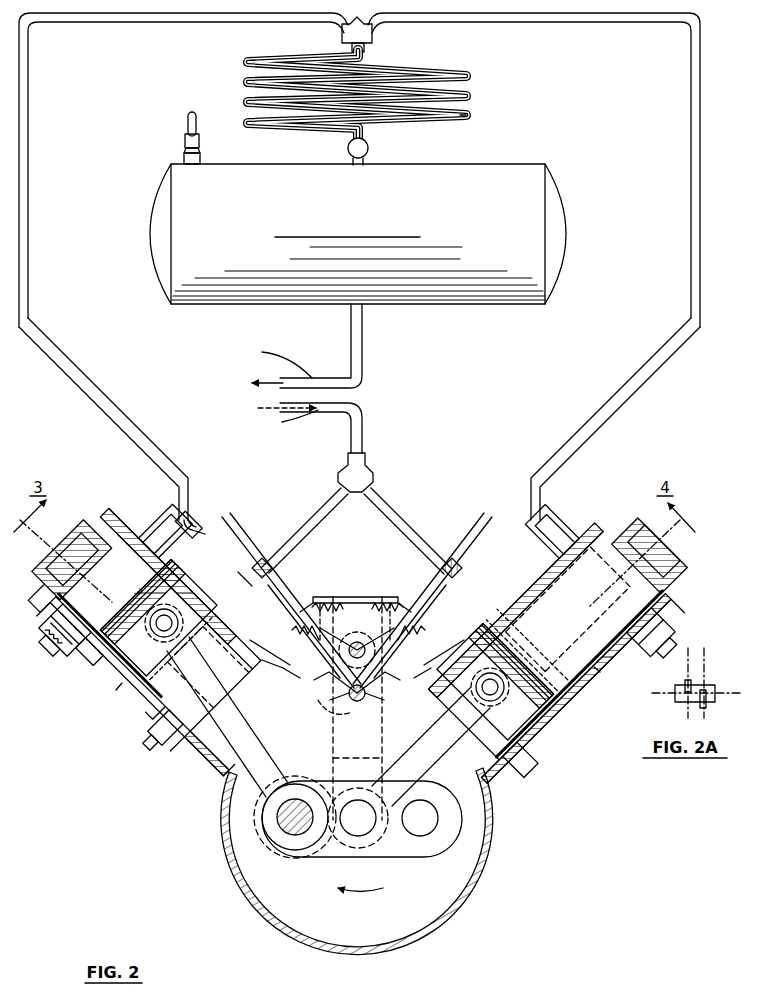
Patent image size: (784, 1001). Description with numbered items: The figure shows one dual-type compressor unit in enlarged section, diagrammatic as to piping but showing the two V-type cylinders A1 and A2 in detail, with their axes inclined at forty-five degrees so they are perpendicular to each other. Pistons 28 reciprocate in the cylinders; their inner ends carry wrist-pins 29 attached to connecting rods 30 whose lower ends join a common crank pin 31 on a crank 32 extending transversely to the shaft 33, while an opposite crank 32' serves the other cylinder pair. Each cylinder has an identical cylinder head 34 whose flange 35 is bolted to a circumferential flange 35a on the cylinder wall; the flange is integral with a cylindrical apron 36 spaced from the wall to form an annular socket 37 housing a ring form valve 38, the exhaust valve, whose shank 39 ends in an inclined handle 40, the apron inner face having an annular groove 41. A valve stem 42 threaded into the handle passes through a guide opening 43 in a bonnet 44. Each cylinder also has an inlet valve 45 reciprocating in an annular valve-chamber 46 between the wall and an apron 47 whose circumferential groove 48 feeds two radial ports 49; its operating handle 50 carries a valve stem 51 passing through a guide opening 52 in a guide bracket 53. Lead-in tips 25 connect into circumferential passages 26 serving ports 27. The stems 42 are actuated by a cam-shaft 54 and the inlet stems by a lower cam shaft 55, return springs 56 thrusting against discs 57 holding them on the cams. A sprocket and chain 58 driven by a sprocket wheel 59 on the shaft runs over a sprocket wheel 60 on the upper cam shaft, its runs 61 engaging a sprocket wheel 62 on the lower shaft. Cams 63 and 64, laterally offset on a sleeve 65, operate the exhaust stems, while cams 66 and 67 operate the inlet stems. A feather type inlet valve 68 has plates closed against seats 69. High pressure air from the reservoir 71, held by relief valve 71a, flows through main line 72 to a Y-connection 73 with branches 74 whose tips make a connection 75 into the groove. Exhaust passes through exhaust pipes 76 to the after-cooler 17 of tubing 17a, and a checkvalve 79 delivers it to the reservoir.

In FIG. 2, the after-cooler 17 is at (474, 85).
In FIG. 2, the tubing 17a is at (421, 120).
In FIG. 2, the lead-in tips 25 is at (264, 578).
In FIG. 2, the circumferential passages 26 is at (204, 676).
In FIG. 2, the ports 27 is at (48, 607).
In FIG. 2, the pistons 28 is at (180, 580).
In FIG. 2, the wrist-pins 29 is at (167, 616).
In FIG. 2, the connecting rods 30 is at (240, 715).
In FIG. 2, the crank pin 31 is at (280, 832).
In FIG. 2, the crank 32 is at (298, 830).
In FIG. 2, the crank 32' is at (365, 829).
In FIG. 2, the shaft 33 is at (368, 830).
In FIG. 2, the cylinder head 34 is at (150, 520).
In FIG. 2, the flange 35 is at (199, 524).
In FIG. 2, the circumferential flange 35a is at (96, 676).
In FIG. 2, the cylindrical apron 36 is at (58, 644).
In FIG. 2, the annular socket 37 is at (60, 652).
In FIG. 2, the ring form valve 38 is at (42, 624).
In FIG. 2, the shank 39 is at (197, 520).
In FIG. 2, the handle 40 is at (232, 535).
In FIG. 2, the annular groove 41 is at (46, 634).
In FIG. 2, the valve stem 42 is at (256, 555).
In FIG. 2, the guide opening 43 is at (325, 596).
In FIG. 2, the bonnet 44 is at (380, 600).
In FIG. 2, the inlet valve 45 is at (135, 710).
In FIG. 2, the annular valve-chamber 46 is at (158, 735).
In FIG. 2, the apron 47 is at (150, 722).
In FIG. 2, the circumferential groove 48 is at (132, 728).
In FIG. 2, the radial ports 49 is at (215, 640).
In FIG. 2, the operating handle 50 is at (270, 652).
In FIG. 2, the valve stem 51 is at (438, 656).
In FIG. 2, the guide opening 52 is at (297, 682).
In FIG. 2, the guide bracket 53 is at (270, 668).
In FIG. 2, the cam-shaft 54 is at (372, 640).
In FIG. 2, the cam shaft 55 is at (355, 702).
In FIG. 2, the return springs 56 is at (326, 608).
In FIG. 2, the discs 57 is at (346, 612).
In FIG. 2, the sprocket and chain 58 is at (384, 757).
In FIG. 2, the sprocket wheel 59 is at (361, 879).
In FIG. 2, the sprocket wheel 60 is at (340, 680).
In FIG. 2, the runs 61 is at (384, 719).
In FIG. 2, the sprocket wheel 62 is at (340, 716).
In FIG. 2, the cam 63 is at (339, 648).
In FIG. 2A, the cam 63 is at (686, 680).
In FIG. 2, the cam 64 is at (362, 686).
In FIG. 2A, the cam 64 is at (706, 705).
In FIG. 2, the sleeve 65 is at (357, 642).
In FIG. 2A, the sleeve 65 is at (708, 684).
In FIG. 2, the cam 66 is at (375, 690).
In FIG. 2, the cam 67 is at (360, 703).
In FIG. 2, the feather type inlet valve 68 is at (66, 530).
In FIG. 2, the seats 69 is at (670, 560).
In FIG. 2, the reservoir 71 is at (358, 234).
In FIG. 2, the relief valve 71a is at (183, 144).
In FIG. 2, the main line 72 is at (366, 424).
In FIG. 2, the Y-connection 73 is at (370, 470).
In FIG. 2, the branches 74 is at (318, 510).
In FIG. 2, the connection 75 is at (246, 578).
In FIG. 2, the exhaust pipes 76 is at (634, 397).
In FIG. 2, the checkvalve 79 is at (347, 149).
In FIG. 2, the cylinder A1 is at (600, 672).
In FIG. 2, the cylinder A2 is at (116, 690).